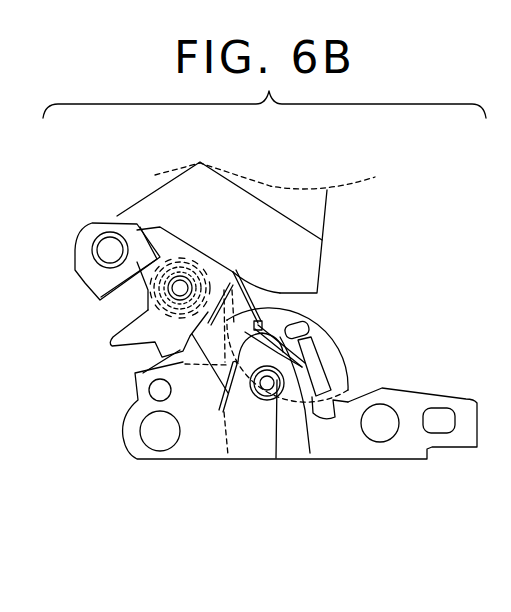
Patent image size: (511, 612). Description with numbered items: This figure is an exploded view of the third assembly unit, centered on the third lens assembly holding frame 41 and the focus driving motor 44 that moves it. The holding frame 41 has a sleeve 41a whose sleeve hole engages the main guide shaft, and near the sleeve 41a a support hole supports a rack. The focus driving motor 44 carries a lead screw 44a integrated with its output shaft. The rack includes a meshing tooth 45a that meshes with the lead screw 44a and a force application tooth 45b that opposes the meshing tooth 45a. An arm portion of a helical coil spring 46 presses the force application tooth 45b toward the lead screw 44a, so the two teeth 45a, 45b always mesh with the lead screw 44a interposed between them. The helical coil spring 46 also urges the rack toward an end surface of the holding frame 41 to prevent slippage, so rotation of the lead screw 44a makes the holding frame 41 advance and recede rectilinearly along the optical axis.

The third lens assembly holding frame 41 is at (312, 255).
The sleeve 41a is at (112, 243).
The focus driving motor 44 is at (335, 360).
The lead screw 44a is at (276, 458).
The meshing tooth 45a is at (228, 455).
The force application tooth 45b is at (310, 453).
The helical coil spring 46 is at (133, 374).